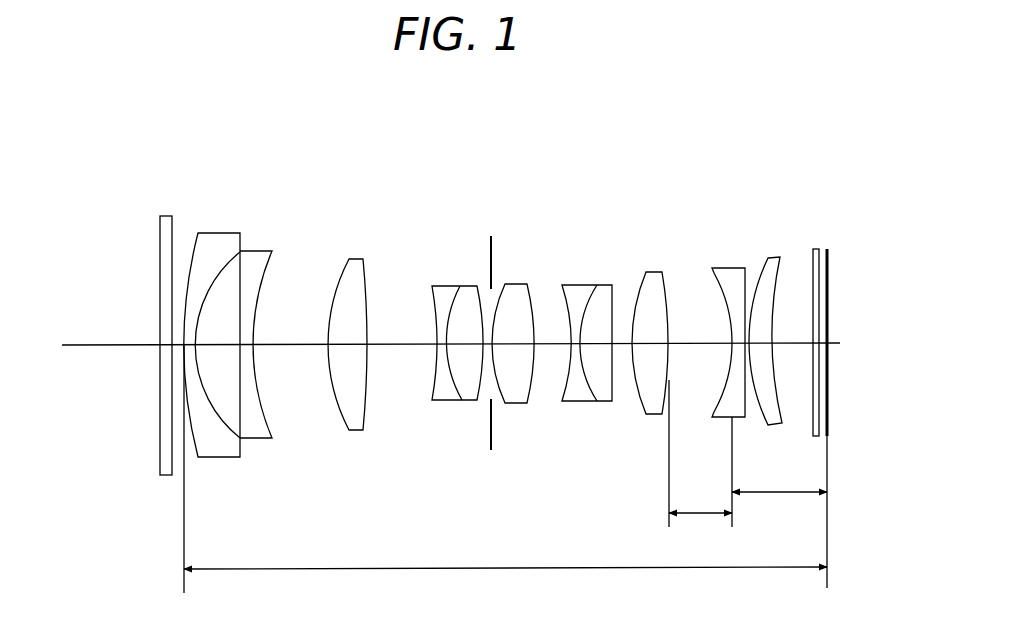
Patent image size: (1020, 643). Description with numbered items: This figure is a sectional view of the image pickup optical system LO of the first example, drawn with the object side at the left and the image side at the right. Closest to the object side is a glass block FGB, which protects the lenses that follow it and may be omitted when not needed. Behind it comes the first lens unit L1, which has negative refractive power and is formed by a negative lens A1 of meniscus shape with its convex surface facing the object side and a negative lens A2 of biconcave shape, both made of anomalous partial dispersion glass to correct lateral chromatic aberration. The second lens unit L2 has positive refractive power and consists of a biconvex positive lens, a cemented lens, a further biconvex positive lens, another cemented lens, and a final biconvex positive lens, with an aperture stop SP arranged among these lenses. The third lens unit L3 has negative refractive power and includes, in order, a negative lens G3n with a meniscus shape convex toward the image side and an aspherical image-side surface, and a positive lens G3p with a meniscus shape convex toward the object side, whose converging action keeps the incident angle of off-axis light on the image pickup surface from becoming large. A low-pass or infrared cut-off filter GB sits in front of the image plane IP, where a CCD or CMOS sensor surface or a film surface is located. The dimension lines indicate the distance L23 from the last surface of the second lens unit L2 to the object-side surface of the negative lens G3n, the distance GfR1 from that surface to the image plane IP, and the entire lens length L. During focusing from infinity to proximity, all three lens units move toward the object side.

The glass block FGB is at (160, 443).
The negative lens A1 is at (224, 464).
The negative lens A2 is at (262, 451).
The first lens unit L1 is at (271, 190).
The second lens unit L2 is at (667, 190).
The third lens unit L3 is at (782, 190).
The image pickup optical system LO is at (782, 123).
The aperture stop SP is at (488, 257).
The negative lens G3n is at (725, 277).
The positive lens G3p is at (773, 266).
The low-pass filter or infrared cut-off filter GB is at (813, 421).
The image plane IP is at (829, 268).
The distance between second and third lens units L23 is at (700, 464).
The distance from negative lens G3n to image plane GfR1 is at (779, 507).
The entire lens length L is at (505, 474).